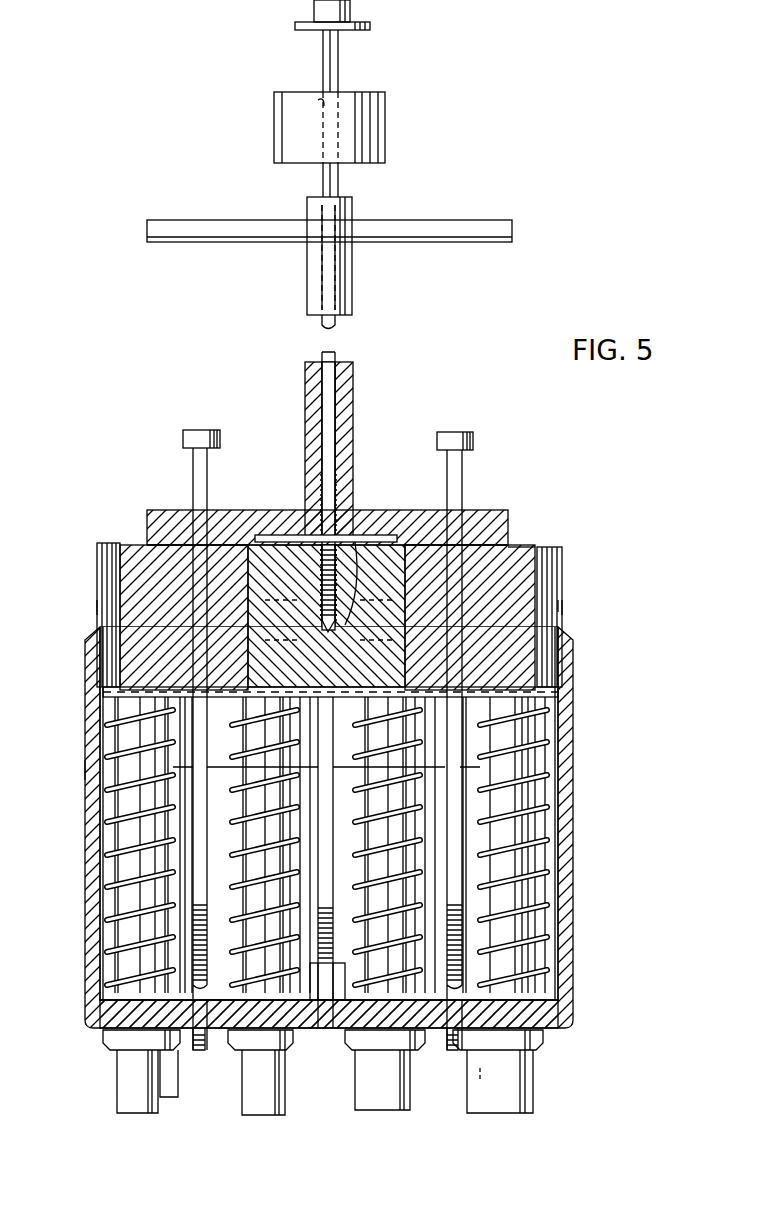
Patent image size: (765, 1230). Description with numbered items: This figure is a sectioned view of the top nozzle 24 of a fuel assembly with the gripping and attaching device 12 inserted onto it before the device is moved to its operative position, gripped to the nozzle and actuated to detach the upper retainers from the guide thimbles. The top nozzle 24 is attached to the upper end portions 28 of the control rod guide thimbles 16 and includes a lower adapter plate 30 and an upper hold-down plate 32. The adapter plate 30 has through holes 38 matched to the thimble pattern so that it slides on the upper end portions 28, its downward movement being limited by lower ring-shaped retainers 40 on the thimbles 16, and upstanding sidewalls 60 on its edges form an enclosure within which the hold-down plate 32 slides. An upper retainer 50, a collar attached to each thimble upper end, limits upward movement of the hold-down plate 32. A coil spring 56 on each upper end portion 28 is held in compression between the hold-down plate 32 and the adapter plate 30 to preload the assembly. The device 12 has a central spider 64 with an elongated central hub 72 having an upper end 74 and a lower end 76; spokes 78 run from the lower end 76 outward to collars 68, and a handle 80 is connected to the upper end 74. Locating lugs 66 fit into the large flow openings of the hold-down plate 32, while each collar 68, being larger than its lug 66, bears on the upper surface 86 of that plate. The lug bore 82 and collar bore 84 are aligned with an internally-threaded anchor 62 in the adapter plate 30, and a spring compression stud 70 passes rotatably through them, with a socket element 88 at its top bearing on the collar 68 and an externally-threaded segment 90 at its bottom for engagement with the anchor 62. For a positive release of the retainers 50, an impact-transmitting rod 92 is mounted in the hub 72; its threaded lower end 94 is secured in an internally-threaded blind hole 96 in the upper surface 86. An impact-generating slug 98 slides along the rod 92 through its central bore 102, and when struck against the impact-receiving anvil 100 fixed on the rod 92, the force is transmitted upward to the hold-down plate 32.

The gripping and attaching device 12 is at (611, 145).
The control rod guide thimbles 16 is at (120, 1080).
The top nozzle 24 is at (581, 696).
The guide thimble upper end portions 28 is at (107, 870).
The lower adapter plate 30 is at (90, 1025).
The upper hold-down plate 32 is at (562, 605).
The through holes 38 is at (480, 1068).
The lower ring-shaped retainers 40 is at (105, 1045).
The upper retainer 50 is at (100, 600).
The coil spring 56 is at (108, 835).
The upstanding sidewalls 60 is at (85, 770).
The anchors 62 is at (198, 1035).
The central spider 64 is at (361, 361).
The locating lugs 66 is at (125, 547).
The collars 68 is at (147, 525).
The spring compression studs 70 is at (193, 467).
The central hub 72 is at (352, 283).
The upper end 74 is at (352, 210).
The lower end 76 is at (298, 510).
The spokes 78 is at (268, 510).
The handle 80 is at (470, 222).
The central bore of locating lug 82 is at (200, 698).
The central bore of collar 84 is at (195, 525).
The upper surface of hold-down plate 86 is at (525, 547).
The socket element 88 is at (183, 438).
The externally-threaded segment 90 is at (205, 935).
The impact-transmitting rod 92 is at (323, 178).
The lower end of rod 94 is at (345, 530).
The internally-threaded blind hole 96 is at (360, 540).
The impact-generating slug 98 is at (385, 120).
The impact-receiving anvil 100 is at (370, 26).
The central bore 102 is at (300, 95).